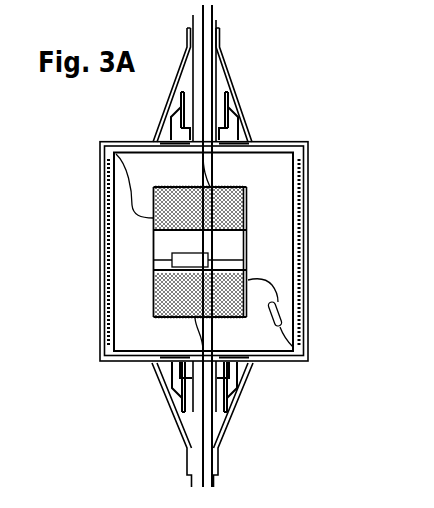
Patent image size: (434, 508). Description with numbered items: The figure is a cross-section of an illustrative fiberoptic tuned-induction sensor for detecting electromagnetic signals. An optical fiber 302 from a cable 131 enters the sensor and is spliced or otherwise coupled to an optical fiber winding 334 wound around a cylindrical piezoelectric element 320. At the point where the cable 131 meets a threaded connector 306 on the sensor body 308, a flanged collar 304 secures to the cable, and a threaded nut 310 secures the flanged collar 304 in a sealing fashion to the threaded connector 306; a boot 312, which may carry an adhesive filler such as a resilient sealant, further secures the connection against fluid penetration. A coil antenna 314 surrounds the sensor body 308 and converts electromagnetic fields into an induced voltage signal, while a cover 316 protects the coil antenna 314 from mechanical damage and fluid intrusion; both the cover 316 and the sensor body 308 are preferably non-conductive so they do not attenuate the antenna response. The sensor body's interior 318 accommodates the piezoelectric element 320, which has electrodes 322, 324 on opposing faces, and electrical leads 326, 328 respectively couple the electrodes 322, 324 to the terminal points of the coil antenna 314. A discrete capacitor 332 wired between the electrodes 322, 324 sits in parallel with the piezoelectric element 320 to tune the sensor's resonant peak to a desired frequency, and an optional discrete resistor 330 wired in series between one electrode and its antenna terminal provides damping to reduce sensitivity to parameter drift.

The optical fiber 302 is at (213, 12).
The boot 312 is at (221, 56).
The cable 131 is at (212, 75).
The flanged collar 304 is at (218, 97).
The threaded nut 310 is at (236, 120).
The threaded connector 306 is at (237, 143).
The sensor body 308 is at (120, 152).
The cover 316 is at (309, 142).
The sensor body interior 318 is at (282, 173).
The coil antenna 314 is at (308, 248).
The cylindrical piezoelectric element 320 is at (228, 193).
The electrode 322 is at (154, 187).
The electrode 324 is at (248, 221).
The electrical lead 326 is at (137, 223).
The electrical lead 328 is at (265, 272).
The discrete resistor 330 is at (270, 316).
The discrete capacitor 332 is at (196, 254).
The optical fiber winding 334 is at (165, 318).